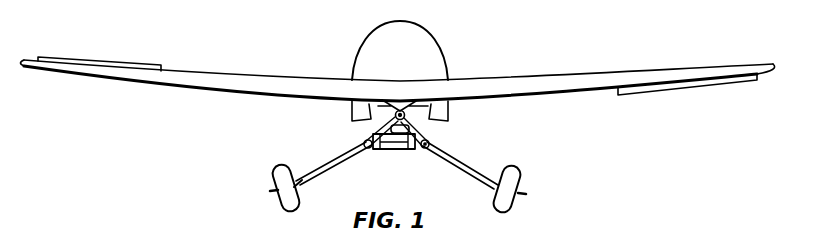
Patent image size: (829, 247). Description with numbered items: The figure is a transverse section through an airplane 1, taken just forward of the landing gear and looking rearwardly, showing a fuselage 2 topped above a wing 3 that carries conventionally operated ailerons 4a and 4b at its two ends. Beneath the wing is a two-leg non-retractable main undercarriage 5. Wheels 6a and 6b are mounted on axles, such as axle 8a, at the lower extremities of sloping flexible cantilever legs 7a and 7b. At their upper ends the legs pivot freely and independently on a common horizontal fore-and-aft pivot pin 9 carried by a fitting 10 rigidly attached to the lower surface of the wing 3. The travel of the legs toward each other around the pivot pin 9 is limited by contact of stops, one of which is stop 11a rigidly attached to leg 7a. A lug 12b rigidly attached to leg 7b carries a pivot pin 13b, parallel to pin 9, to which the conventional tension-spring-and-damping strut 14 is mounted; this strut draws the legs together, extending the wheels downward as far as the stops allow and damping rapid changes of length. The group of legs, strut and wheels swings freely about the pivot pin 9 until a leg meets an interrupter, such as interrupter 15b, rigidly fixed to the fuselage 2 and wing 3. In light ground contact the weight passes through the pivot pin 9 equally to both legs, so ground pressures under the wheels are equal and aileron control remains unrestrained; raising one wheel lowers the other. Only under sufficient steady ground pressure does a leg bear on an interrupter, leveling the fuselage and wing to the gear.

The airplane 1 is at (352, 78).
The fuselage 2 is at (443, 58).
The wings 3 is at (531, 77).
The aileron 4a is at (164, 66).
The aileron 4b is at (735, 82).
The undercarriage 5 is at (297, 180).
The wheel 6a is at (275, 167).
The wheel 6b is at (515, 166).
The sloping flexible cantilever leg 7a is at (318, 170).
The sloping flexible cantilever leg 7b is at (469, 172).
The axle 8a is at (272, 192).
The pivot pin 9 is at (402, 110).
The fitting 10 is at (397, 110).
The stop 11a is at (362, 137).
The lug 12b is at (419, 150).
The pivot pin 13b is at (440, 140).
The tension-spring-and-damping strut 14 is at (390, 150).
The interrupter 15b is at (443, 113).